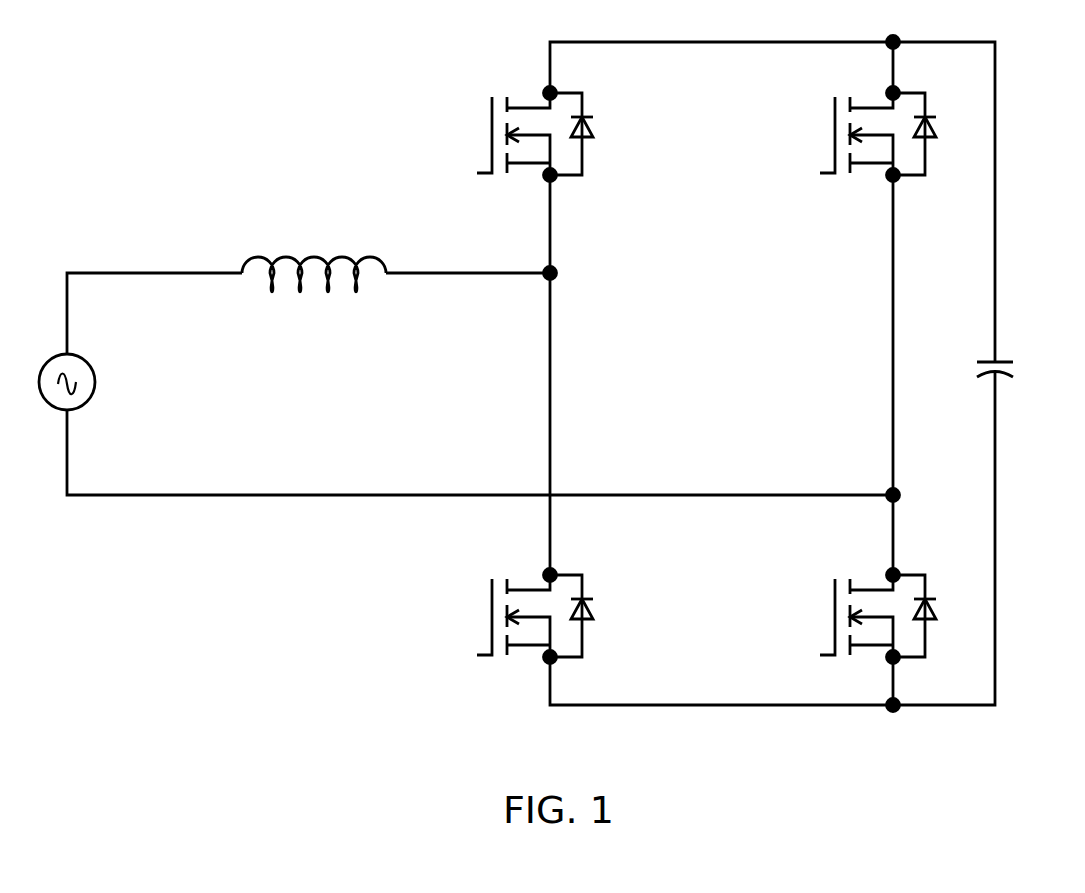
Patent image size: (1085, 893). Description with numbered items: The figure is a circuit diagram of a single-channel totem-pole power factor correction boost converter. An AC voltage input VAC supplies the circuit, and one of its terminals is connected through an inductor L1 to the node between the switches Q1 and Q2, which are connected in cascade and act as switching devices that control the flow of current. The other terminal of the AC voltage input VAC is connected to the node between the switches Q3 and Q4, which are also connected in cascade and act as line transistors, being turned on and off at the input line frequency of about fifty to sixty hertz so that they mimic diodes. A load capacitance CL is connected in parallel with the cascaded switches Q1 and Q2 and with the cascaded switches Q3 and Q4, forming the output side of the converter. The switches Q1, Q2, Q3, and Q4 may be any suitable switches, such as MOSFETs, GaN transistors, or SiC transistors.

The switch Q1 is at (516, 134).
The switch Q2 is at (516, 616).
The switch Q3 is at (859, 134).
The switch Q4 is at (859, 616).
The inductor L1 is at (310, 299).
The AC voltage input VAC is at (100, 382).
The load capacitance CL is at (1019, 374).